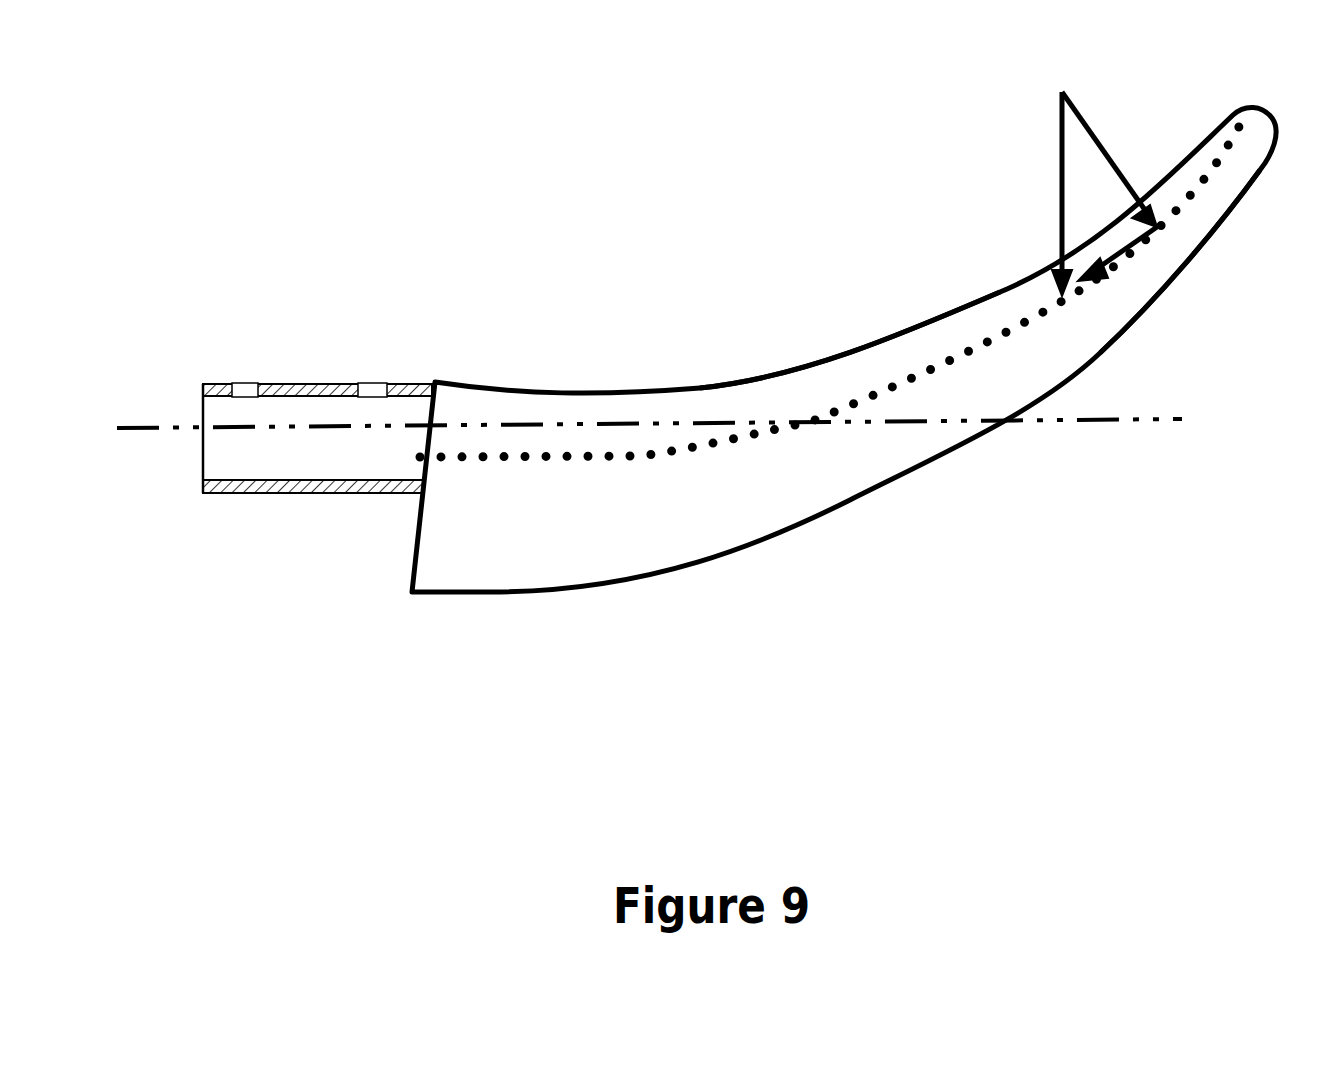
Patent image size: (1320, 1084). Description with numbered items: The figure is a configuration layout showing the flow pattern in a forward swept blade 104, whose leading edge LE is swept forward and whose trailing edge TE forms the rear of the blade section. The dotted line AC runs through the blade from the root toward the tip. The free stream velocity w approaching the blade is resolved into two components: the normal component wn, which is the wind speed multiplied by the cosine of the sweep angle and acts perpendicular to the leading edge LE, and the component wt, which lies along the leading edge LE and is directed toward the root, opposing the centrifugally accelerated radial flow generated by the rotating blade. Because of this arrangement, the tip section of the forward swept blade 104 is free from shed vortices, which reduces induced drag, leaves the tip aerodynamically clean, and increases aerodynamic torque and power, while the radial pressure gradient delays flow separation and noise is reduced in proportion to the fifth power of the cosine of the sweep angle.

The propeller blade 104 is at (505, 340).
The leading edge LE is at (928, 312).
The trailing edge TE is at (1145, 322).
The aerodynamic center line AC is at (553, 462).
The free stream velocity w is at (1042, 194).
The normal component of the wind speed wn is at (1111, 159).
The component along the leading edge wt is at (1120, 264).